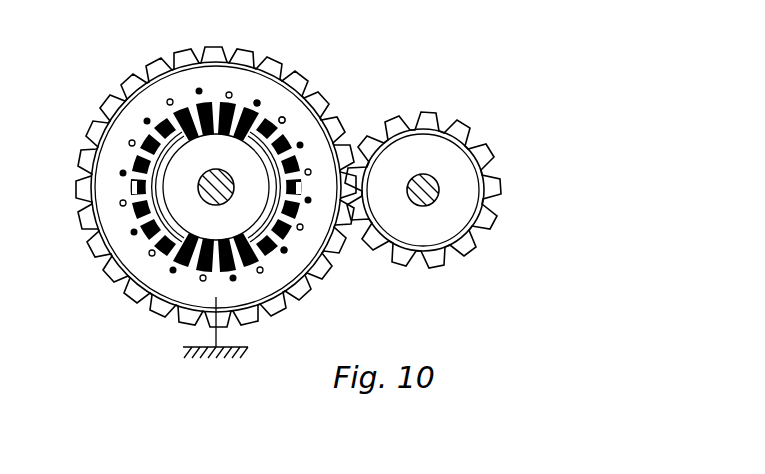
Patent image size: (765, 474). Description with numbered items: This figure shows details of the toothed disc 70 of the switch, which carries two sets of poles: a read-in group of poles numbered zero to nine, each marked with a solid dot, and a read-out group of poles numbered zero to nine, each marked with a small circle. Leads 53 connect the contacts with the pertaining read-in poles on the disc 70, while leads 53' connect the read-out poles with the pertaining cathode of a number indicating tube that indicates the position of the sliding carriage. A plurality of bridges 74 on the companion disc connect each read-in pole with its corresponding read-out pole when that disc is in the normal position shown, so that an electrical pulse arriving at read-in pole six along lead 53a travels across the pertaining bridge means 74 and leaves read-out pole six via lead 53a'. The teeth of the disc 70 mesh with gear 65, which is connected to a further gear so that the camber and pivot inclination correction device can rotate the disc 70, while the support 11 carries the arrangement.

The leads 53 is at (211, 172).
The bridges 74 is at (254, 105).
The disc 70 is at (123, 173).
The lead 53a is at (312, 58).
The lead 53a' is at (334, 287).
The leads 53' is at (380, 99).
The gear 65 is at (452, 160).
The support 11 is at (190, 268).